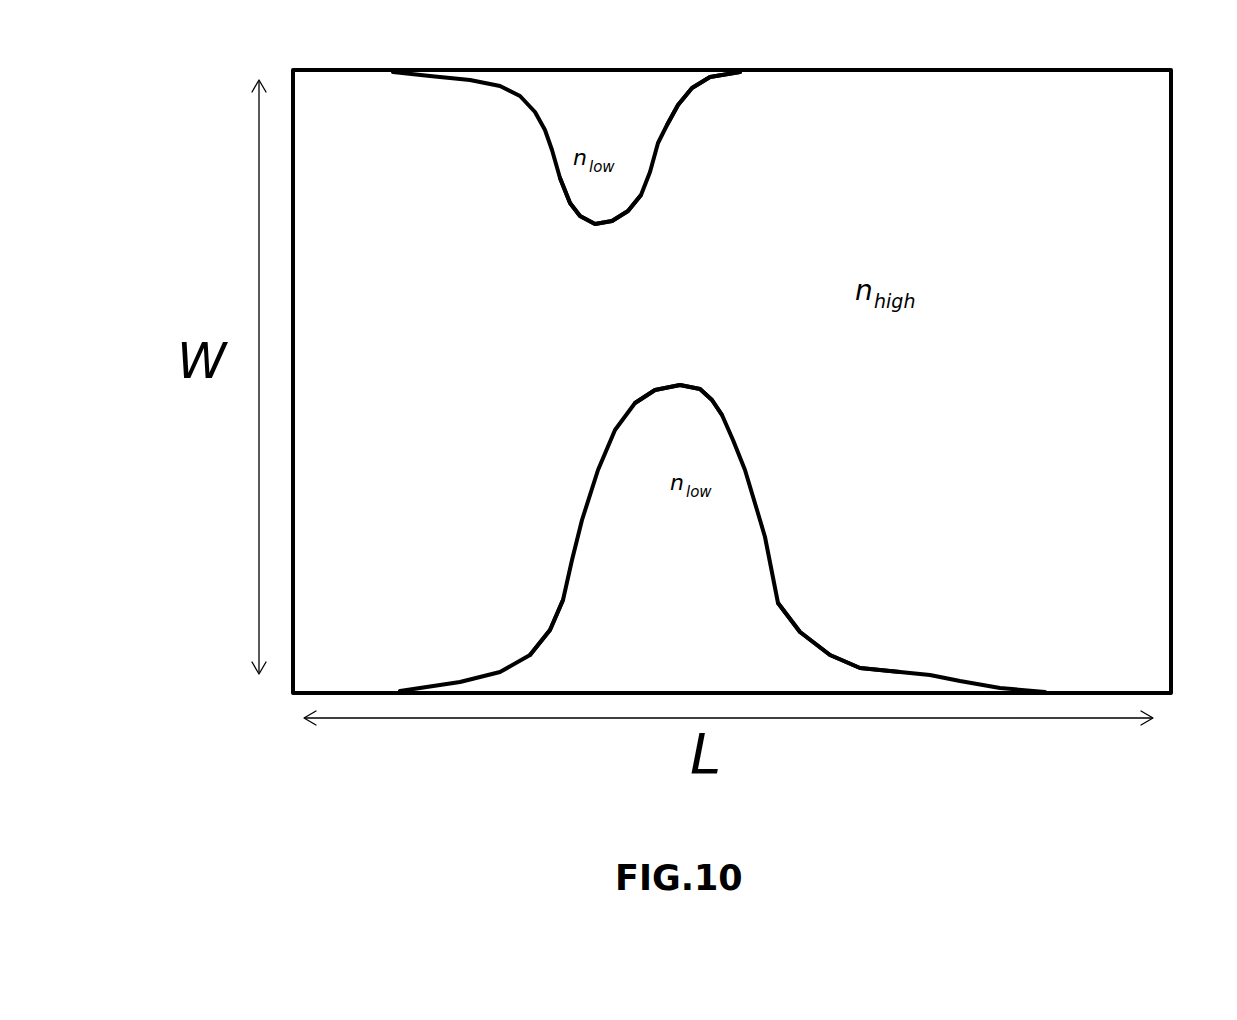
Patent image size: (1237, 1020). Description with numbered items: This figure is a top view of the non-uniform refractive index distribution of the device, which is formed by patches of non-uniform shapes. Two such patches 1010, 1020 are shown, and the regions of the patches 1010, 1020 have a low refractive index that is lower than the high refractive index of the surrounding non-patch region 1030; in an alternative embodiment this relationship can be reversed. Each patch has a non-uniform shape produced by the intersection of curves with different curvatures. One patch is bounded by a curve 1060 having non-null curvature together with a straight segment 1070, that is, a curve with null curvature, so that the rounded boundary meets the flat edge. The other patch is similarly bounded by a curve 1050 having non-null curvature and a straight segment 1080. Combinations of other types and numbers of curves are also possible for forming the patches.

The patch 1010 is at (553, 125).
The patch 1020 is at (592, 580).
The non-patch region 1030 is at (925, 176).
The curve 1050 is at (563, 193).
The curve 1060 is at (710, 393).
The straight segment 1070 is at (657, 695).
The straight segment 1080 is at (648, 73).